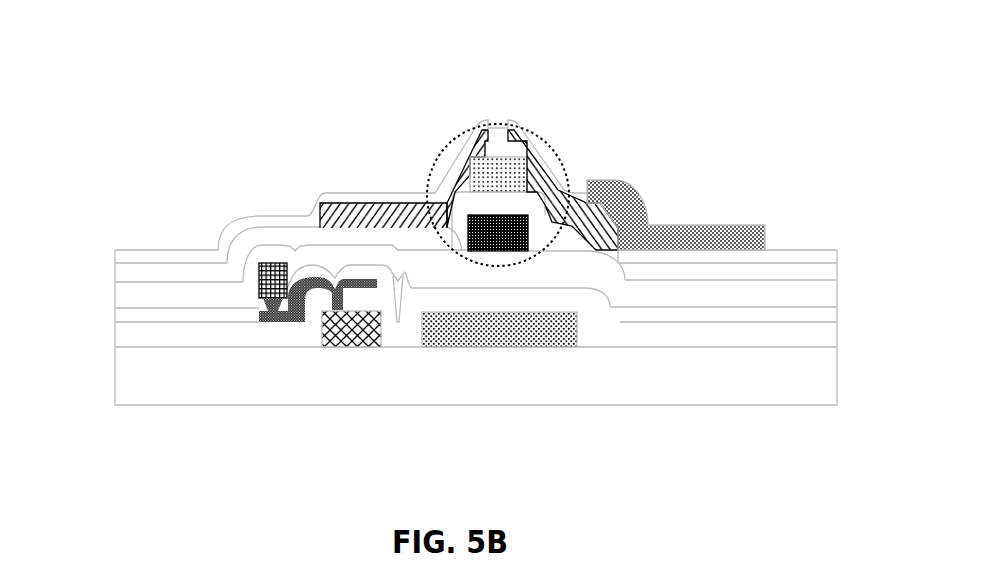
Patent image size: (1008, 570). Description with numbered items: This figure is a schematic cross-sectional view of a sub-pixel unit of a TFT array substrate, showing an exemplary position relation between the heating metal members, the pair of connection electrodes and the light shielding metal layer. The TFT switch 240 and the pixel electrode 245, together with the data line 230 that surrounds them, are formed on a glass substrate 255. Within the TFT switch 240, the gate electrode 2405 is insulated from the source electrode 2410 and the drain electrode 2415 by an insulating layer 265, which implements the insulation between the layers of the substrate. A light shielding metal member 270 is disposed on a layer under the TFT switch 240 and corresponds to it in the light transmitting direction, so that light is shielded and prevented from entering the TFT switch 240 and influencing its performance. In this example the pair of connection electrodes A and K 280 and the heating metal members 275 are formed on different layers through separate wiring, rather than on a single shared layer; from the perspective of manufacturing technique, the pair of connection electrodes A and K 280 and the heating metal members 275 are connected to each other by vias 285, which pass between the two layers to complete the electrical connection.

The data line 230 is at (355, 203).
The TFT switch 240 is at (498, 121).
The gate electrode 2405 is at (498, 227).
The source electrode 2410 is at (453, 175).
The drain electrode 2415 is at (527, 143).
The pixel electrode 245 is at (655, 237).
The glass substrate 255 is at (123, 368).
The insulating layer 265 is at (283, 235).
The light shielding metal member 270 is at (507, 322).
The heating metal member 275 is at (349, 335).
The pair of connection electrodes A and K 280 is at (273, 286).
The via 285 is at (265, 323).